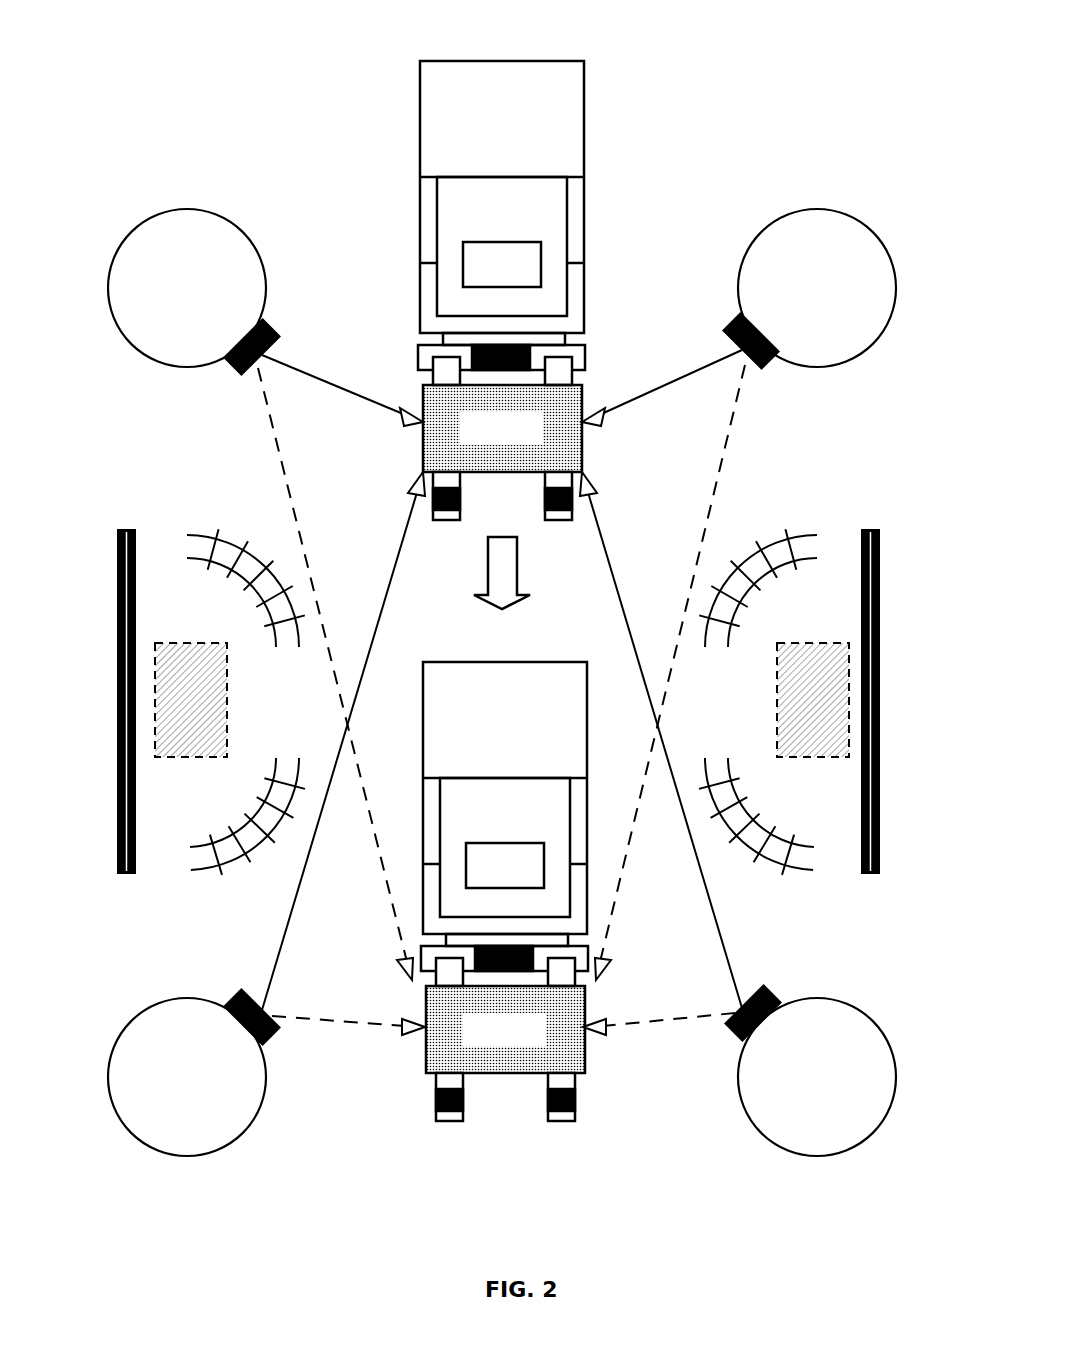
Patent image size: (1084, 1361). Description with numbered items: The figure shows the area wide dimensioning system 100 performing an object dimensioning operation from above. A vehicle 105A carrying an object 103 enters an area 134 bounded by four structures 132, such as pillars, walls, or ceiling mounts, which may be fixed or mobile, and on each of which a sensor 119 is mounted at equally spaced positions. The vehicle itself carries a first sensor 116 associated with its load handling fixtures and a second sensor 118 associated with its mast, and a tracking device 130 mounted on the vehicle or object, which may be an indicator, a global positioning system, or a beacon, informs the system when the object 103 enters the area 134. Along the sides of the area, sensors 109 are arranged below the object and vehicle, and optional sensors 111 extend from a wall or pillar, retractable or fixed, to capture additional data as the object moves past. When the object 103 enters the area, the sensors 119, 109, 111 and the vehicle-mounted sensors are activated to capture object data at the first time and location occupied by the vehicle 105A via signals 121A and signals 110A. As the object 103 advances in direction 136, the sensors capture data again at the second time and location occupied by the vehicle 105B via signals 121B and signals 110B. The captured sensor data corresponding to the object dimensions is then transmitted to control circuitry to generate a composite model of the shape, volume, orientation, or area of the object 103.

The area wide dimensioning system 100 is at (214, 50).
The object 103 is at (504, 729).
The vehicle at first location 105A is at (548, 58).
The vehicle at second location 105B is at (556, 658).
The sensors 109 is at (124, 872).
The signals 110A is at (180, 521).
The signals 110B is at (194, 884).
The sensors 111 is at (180, 762).
The first sensor 116 is at (550, 502).
The second sensor 118 is at (532, 357).
The sensors 119 is at (266, 334).
The signals 121A is at (378, 414).
The signals 121B is at (286, 488).
The tracking device 130 is at (503, 565).
The structures 132 is at (502, 682).
The area 134 is at (780, 458).
The direction 136 is at (487, 574).